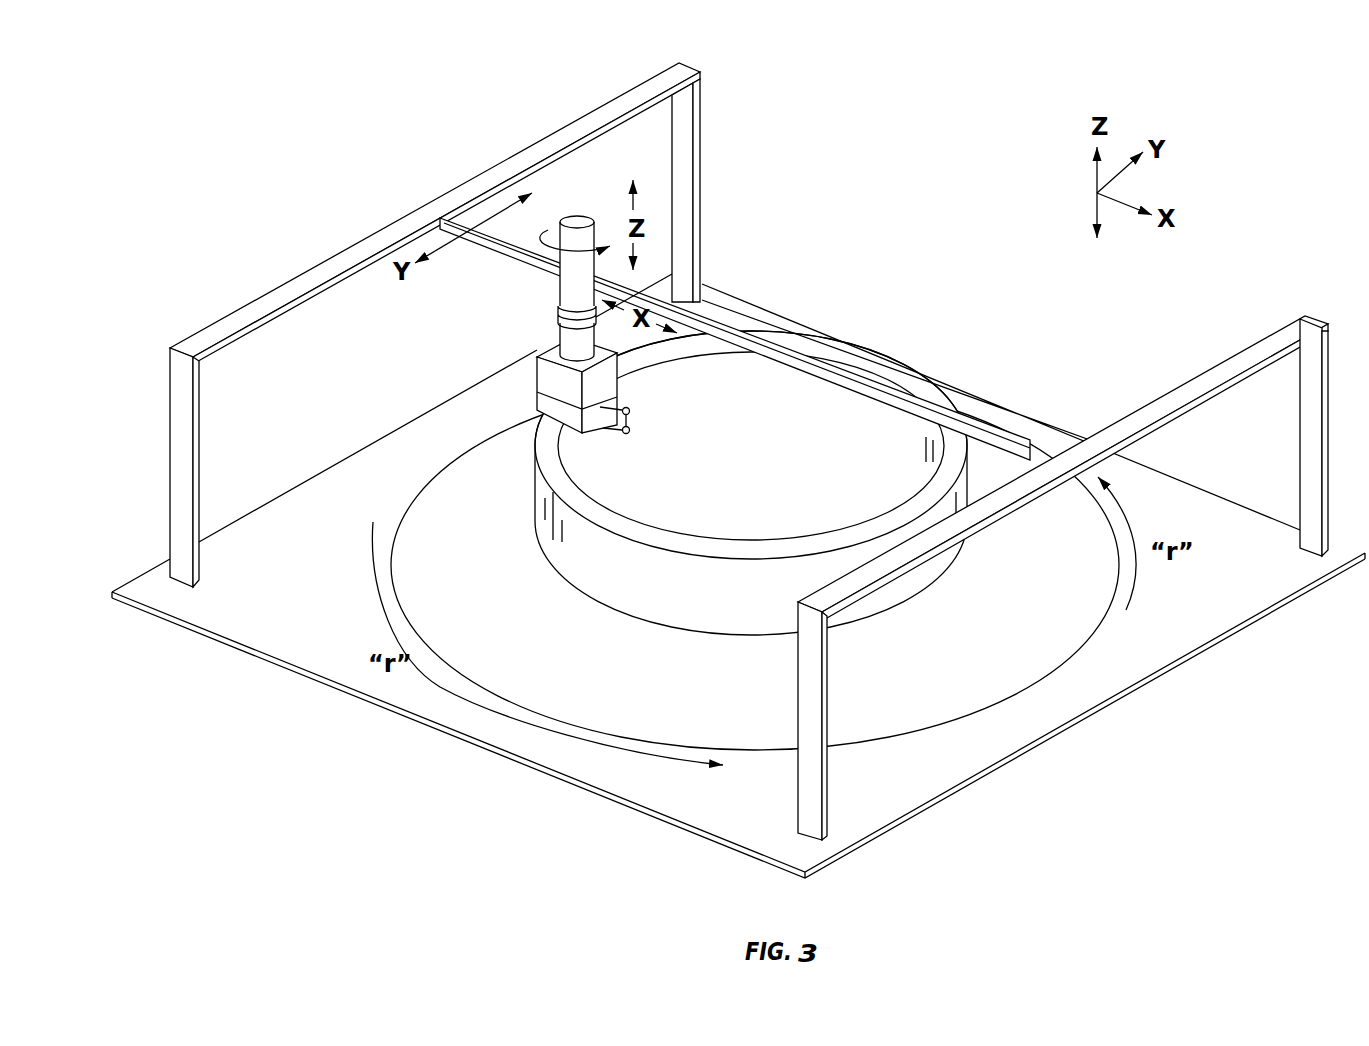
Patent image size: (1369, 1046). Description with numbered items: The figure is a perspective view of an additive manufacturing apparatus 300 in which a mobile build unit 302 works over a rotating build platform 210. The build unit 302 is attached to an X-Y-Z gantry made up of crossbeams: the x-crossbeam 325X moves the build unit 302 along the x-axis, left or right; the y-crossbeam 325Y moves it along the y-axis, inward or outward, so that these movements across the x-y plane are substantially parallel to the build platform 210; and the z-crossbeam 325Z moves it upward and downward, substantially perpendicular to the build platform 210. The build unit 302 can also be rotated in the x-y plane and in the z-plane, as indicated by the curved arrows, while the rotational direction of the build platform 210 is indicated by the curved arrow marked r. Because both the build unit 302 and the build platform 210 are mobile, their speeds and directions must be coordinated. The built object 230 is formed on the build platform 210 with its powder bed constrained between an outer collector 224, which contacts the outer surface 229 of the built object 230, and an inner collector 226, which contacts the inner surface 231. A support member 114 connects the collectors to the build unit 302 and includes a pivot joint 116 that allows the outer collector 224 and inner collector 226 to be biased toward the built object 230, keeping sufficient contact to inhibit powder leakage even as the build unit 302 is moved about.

The additive manufacturing apparatus 300 is at (398, 110).
The y-crossbeam 325Y is at (570, 137).
The z-crossbeam 325Z is at (178, 448).
The x-crossbeam 325X is at (970, 420).
The build unit 302 is at (548, 370).
The pivot joint 116 is at (629, 408).
The support member 114 is at (630, 432).
The inner collector 226 is at (576, 434).
The outer collector 224 is at (532, 420).
The inner surface 231 is at (722, 398).
The built object 230 is at (621, 587).
The outer surface 229 is at (574, 555).
The build platform 210 is at (1012, 663).